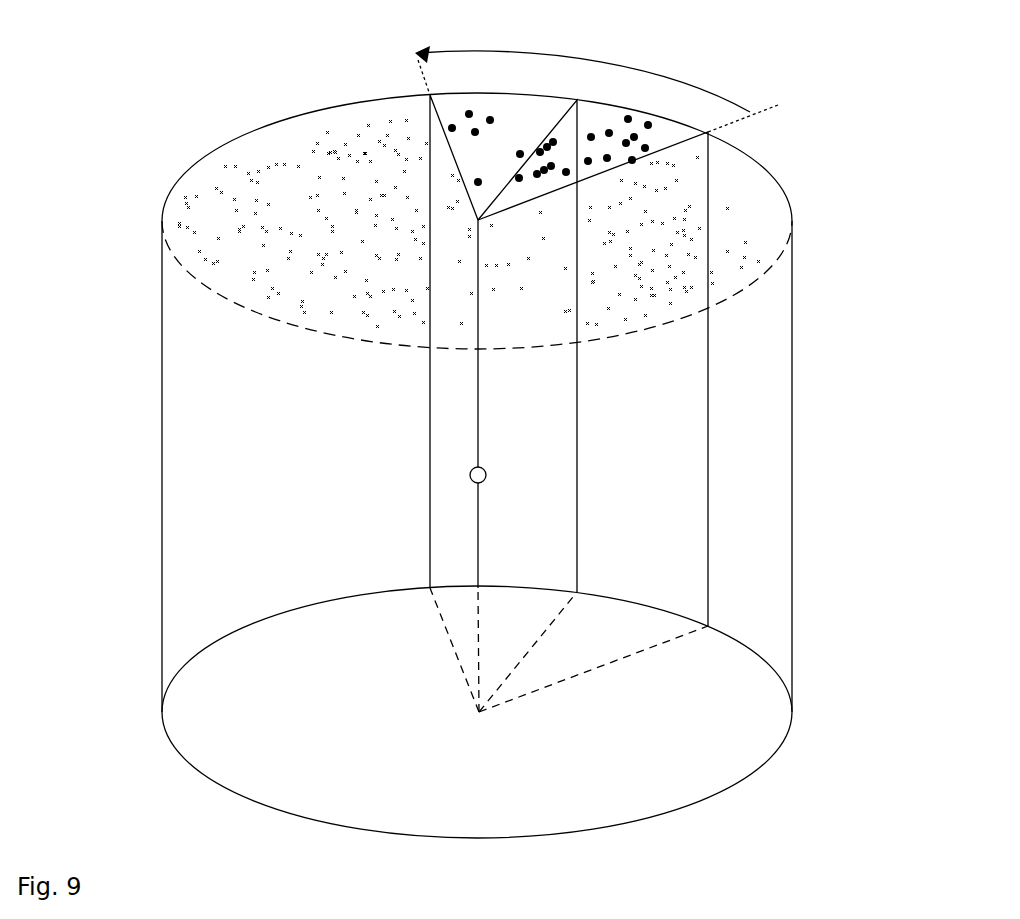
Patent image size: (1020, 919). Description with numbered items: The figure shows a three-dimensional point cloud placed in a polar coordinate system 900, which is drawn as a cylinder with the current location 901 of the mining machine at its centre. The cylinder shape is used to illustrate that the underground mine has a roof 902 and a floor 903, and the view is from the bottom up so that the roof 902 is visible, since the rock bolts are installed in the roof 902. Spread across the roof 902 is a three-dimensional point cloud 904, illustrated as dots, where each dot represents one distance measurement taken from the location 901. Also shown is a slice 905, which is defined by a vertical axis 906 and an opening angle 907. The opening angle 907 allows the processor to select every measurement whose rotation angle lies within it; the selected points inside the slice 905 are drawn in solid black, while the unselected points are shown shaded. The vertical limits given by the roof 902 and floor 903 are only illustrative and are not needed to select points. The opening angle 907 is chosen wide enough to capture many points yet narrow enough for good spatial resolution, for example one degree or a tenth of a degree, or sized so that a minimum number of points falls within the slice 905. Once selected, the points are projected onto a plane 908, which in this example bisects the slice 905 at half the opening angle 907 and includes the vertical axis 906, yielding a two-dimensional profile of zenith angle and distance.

The polar coordinate system 900 is at (150, 68).
The current location 901 is at (482, 472).
The roof 902 is at (765, 179).
The floor 903 is at (772, 737).
The 3D point cloud 904 is at (186, 199).
The slice 905 is at (688, 430).
The vertical axis 906 is at (480, 523).
The opening angle 907 is at (650, 76).
The plane 908 is at (562, 403).